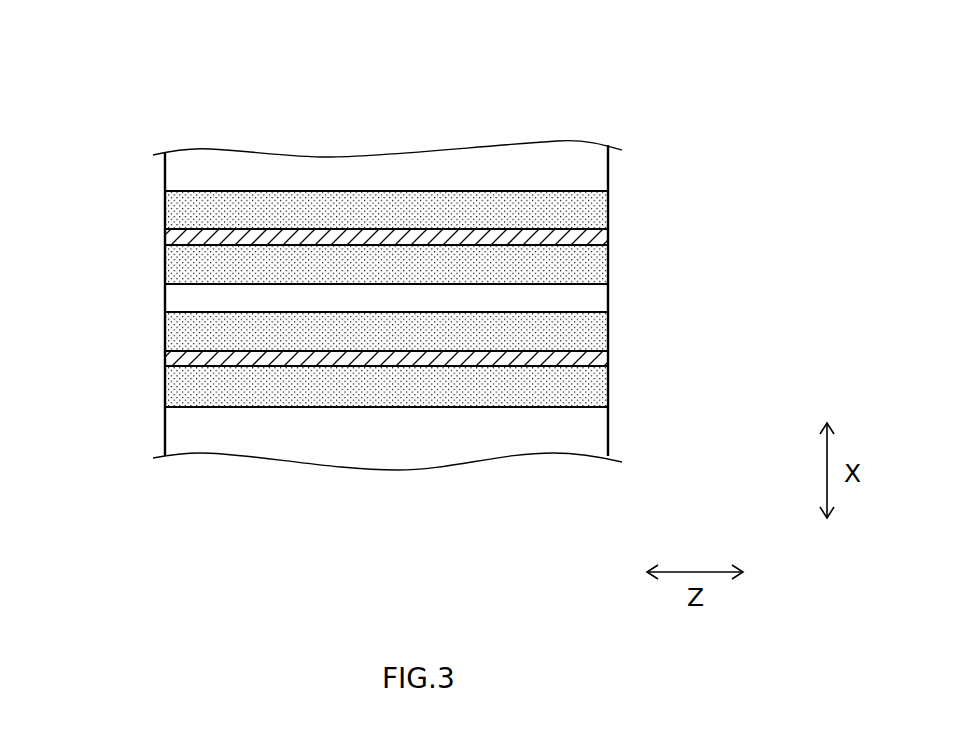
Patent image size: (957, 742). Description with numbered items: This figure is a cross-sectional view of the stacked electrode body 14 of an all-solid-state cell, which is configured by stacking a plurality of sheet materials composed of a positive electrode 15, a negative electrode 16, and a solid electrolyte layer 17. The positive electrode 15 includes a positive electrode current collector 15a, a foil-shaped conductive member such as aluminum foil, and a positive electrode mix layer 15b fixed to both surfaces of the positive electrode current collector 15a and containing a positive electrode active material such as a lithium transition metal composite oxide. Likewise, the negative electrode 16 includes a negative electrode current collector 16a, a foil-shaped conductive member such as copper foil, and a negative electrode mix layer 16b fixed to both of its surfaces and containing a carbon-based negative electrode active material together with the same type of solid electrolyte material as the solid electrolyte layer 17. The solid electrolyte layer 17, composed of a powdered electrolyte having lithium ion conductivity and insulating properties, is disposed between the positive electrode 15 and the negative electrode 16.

The stacked electrode body 14 is at (119, 77).
The positive electrode 15 is at (466, 237).
The positive electrode current collector 15a is at (608, 237).
The positive electrode mix layer 15b is at (608, 208).
The negative electrode 16 is at (466, 361).
The negative electrode current collector 16a is at (608, 360).
The negative electrode mix layer 16b is at (608, 332).
The solid electrolyte layer 17 is at (608, 166).